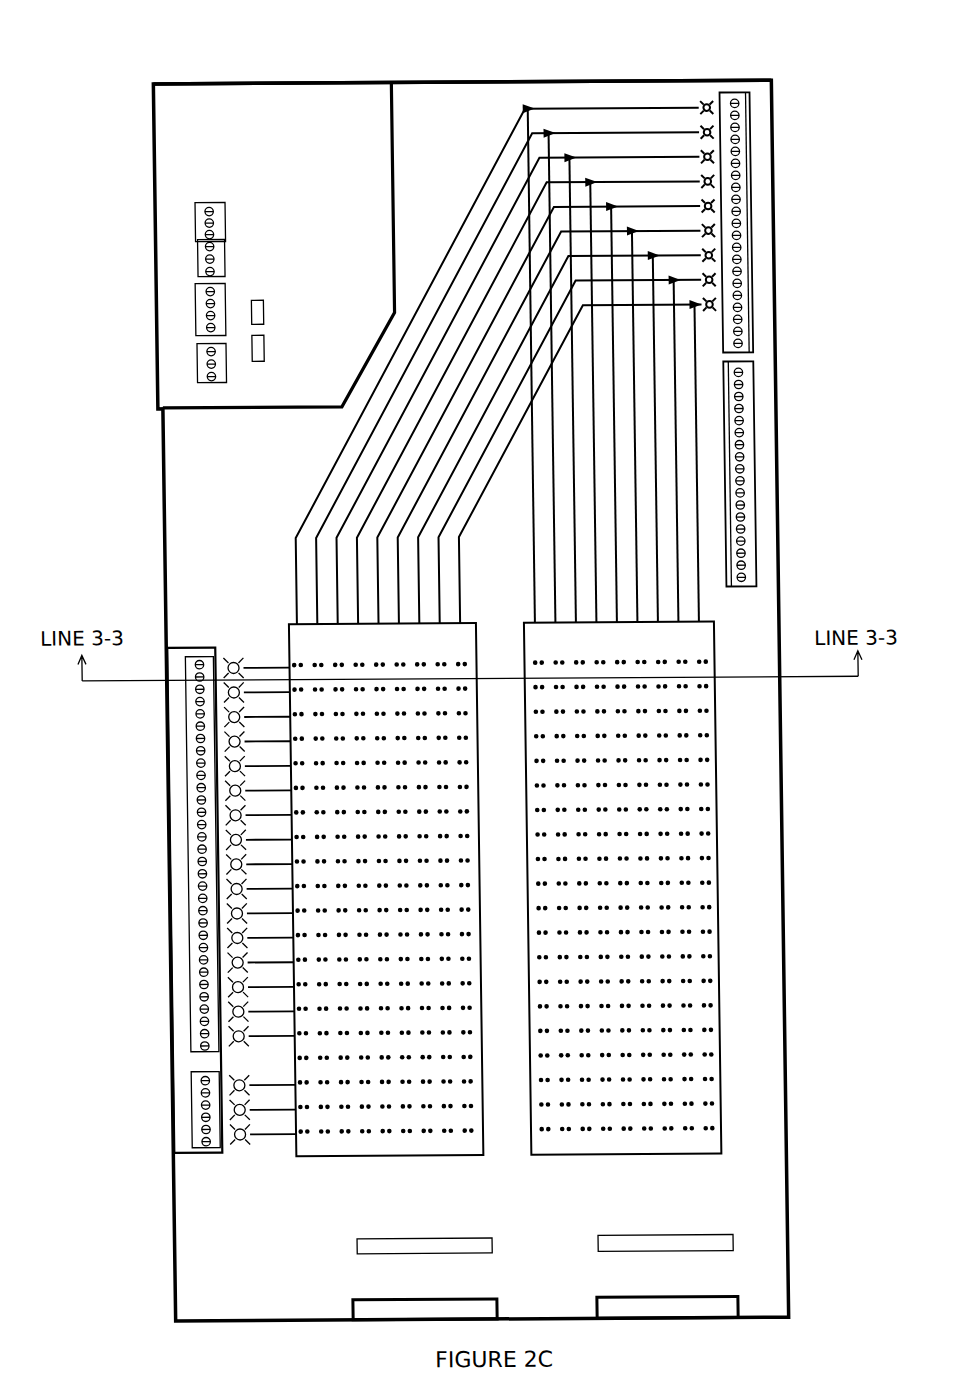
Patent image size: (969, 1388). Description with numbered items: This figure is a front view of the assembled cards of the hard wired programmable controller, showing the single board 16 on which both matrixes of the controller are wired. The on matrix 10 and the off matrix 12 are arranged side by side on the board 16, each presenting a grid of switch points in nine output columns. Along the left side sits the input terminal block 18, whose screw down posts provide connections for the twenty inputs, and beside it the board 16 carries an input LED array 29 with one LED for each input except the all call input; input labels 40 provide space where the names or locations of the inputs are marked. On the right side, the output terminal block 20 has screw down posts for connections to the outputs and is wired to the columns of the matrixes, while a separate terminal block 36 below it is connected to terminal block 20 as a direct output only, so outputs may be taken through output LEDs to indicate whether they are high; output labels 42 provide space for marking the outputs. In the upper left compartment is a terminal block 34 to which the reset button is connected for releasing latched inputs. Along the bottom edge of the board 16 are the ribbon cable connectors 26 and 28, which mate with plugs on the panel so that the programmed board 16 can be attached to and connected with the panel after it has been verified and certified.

The on matrix 10 is at (478, 878).
The off matrix 12 is at (716, 880).
The board 16 is at (782, 1097).
The input terminal block 18 is at (167, 876).
The output terminal block 20 is at (781, 212).
The connector 26 is at (364, 1252).
The connector 28 is at (607, 1253).
The input LED array 29 is at (234, 654).
The terminal block 34 is at (162, 263).
The separate output terminal block 36 is at (783, 484).
The input labels 40 is at (266, 649).
The output labels 42 is at (662, 81).